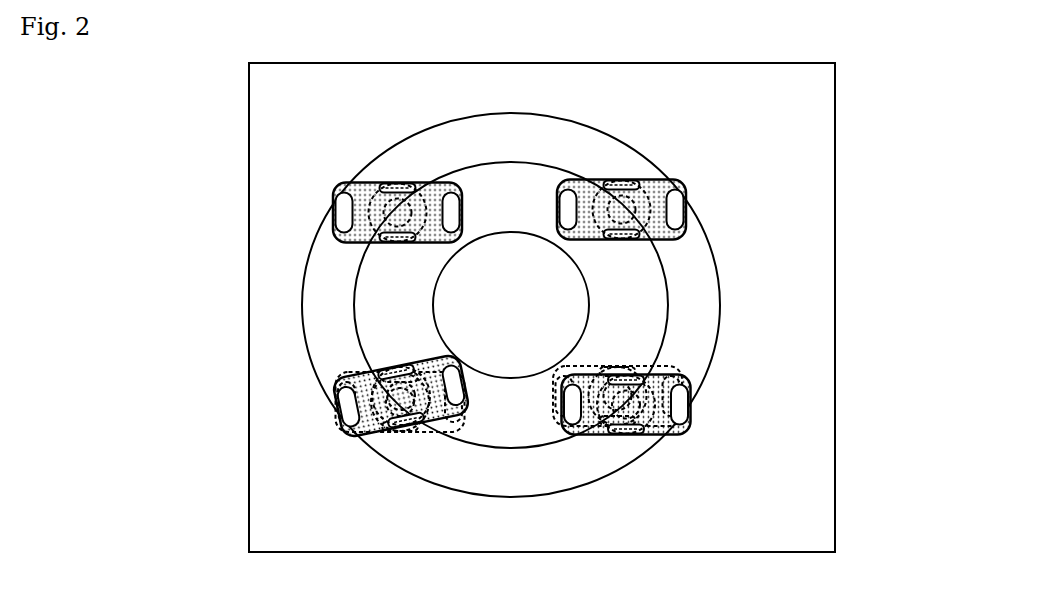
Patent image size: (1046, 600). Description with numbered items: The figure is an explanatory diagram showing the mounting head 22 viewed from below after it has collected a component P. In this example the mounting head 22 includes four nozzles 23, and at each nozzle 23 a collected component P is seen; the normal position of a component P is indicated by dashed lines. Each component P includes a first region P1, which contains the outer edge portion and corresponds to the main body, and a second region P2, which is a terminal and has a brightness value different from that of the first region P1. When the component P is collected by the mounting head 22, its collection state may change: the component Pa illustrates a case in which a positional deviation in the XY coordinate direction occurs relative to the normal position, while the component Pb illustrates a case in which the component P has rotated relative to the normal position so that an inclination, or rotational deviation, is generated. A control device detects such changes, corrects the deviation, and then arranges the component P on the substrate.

The component P is at (727, 182).
The first region P1 is at (751, 246).
The second region P2 is at (782, 201).
The mounting head 22 is at (718, 338).
The nozzle 23 is at (690, 387).
The component with positional deviation Pa is at (622, 434).
The component with rotational deviation Pb is at (358, 432).